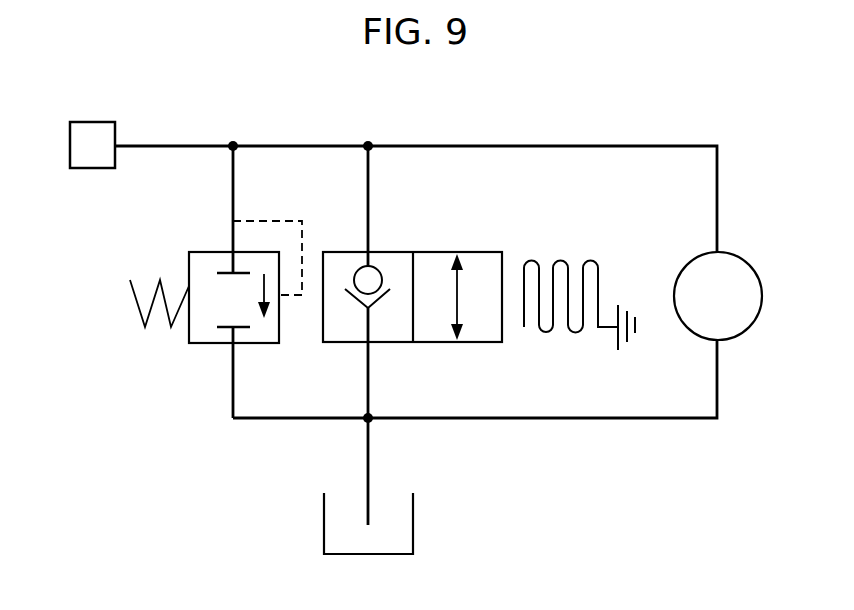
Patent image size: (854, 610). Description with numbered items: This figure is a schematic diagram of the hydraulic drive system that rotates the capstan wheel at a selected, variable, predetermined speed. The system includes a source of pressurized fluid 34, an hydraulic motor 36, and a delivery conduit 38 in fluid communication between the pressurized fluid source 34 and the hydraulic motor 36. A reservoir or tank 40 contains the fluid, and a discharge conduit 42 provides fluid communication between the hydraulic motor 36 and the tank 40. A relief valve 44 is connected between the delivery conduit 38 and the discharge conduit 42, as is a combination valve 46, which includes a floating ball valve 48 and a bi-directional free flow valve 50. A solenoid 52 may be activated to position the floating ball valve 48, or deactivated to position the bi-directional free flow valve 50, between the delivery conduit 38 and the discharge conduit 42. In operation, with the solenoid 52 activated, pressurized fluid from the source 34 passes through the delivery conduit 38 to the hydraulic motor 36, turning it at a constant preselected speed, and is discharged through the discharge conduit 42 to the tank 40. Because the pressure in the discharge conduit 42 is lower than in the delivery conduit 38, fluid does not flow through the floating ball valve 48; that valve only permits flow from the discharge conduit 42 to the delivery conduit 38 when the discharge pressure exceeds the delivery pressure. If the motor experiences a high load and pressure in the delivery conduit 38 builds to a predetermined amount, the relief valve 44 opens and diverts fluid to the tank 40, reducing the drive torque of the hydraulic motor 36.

The source of pressurized fluid 34 is at (92, 122).
The hydraulic motor 36 is at (738, 311).
The delivery conduit 38 is at (578, 145).
The reservoir or tank 40 is at (413, 513).
The discharge conduit 42 is at (653, 418).
The relief valve 44 is at (208, 343).
The combination valve 46 is at (417, 294).
The floating ball valve 48 is at (343, 342).
The bi-directional free flow valve 50 is at (487, 342).
The solenoid 52 is at (614, 278).